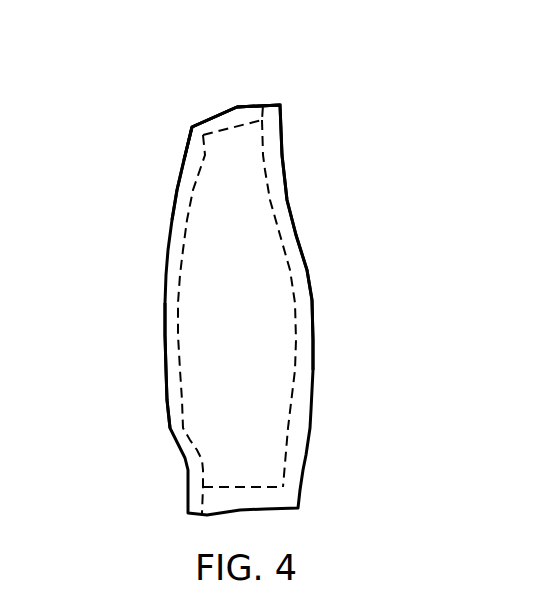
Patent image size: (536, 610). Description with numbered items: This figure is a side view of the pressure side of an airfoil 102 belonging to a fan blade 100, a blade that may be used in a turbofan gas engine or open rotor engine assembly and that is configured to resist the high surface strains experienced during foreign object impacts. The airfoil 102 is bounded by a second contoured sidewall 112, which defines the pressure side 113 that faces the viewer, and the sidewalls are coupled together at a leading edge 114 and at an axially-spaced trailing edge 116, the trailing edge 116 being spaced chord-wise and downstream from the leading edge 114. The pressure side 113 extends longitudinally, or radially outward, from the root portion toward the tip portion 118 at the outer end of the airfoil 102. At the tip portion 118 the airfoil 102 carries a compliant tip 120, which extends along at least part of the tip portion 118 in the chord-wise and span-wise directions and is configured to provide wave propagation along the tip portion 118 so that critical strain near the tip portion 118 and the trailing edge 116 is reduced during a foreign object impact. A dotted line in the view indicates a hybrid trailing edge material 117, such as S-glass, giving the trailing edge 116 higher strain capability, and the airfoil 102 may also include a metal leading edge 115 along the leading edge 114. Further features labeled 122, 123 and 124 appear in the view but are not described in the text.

The fan blade 100 is at (141, 198).
The airfoil 102 is at (267, 205).
The second contoured sidewall 112 is at (166, 372).
The pressure side 113 is at (178, 292).
The leading edge 114 is at (309, 273).
The metal leading edge 115 is at (307, 327).
The trailing edge 116 is at (168, 243).
The hybrid trailing edge material 117 is at (170, 335).
The tip portion 118 is at (282, 93).
The compliant tip 120 is at (230, 113).
The top-left corner portion 122 is at (207, 125).
The top stitch line 123 is at (250, 112).
The bottom stitch line 124 is at (290, 370).